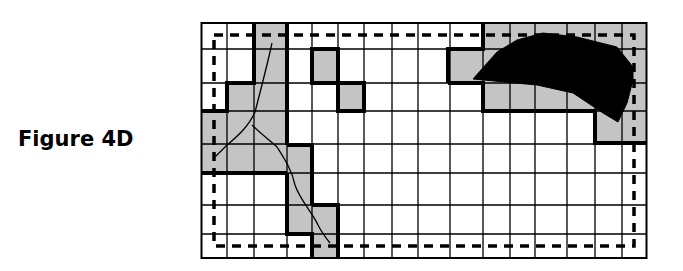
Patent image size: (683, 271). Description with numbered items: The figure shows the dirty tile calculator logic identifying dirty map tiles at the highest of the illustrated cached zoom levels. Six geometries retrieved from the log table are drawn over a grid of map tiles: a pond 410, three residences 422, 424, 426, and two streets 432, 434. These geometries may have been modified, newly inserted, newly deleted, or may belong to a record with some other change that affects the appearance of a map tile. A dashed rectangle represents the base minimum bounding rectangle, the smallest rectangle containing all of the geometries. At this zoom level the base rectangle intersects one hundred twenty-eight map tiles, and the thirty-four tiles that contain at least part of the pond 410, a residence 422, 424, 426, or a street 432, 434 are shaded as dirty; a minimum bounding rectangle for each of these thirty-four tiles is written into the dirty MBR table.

The pond 410 is at (572, 97).
The residence 422 is at (332, 72).
The residence 424 is at (362, 100).
The residence 426 is at (318, 168).
The street 432 is at (320, 214).
The street 434 is at (270, 63).